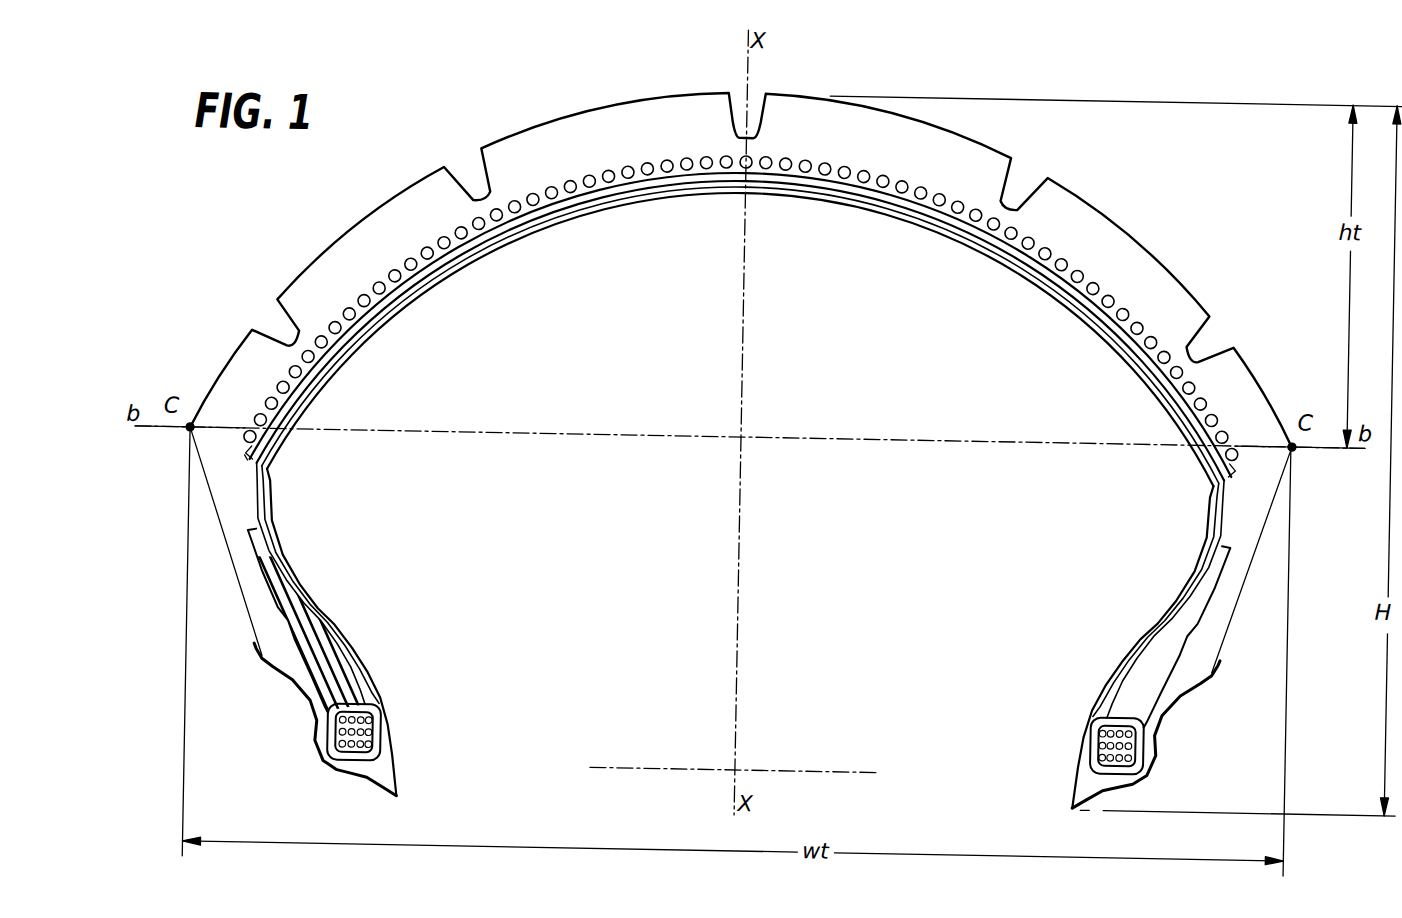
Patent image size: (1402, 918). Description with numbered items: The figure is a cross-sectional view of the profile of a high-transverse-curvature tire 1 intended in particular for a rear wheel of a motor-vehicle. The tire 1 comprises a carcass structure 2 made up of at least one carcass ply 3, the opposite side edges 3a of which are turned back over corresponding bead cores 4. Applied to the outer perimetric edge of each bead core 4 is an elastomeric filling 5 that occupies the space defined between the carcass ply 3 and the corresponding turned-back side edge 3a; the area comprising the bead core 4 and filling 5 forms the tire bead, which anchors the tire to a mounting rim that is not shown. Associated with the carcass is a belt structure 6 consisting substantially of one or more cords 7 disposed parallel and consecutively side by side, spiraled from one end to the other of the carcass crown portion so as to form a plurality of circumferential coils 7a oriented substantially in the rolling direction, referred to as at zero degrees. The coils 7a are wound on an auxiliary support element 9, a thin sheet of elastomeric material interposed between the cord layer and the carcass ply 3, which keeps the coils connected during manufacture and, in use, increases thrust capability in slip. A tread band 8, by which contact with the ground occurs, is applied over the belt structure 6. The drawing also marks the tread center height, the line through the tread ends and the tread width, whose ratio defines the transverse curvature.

The tire 1 is at (952, 65).
The carcass structure 2 is at (1248, 514).
The carcass ply 3 is at (1133, 343).
The turned-back side edge of the carcass ply 3a is at (1199, 624).
The bead core 4 is at (1136, 738).
The elastomeric filling 5 is at (1120, 693).
The belt structure 6 is at (245, 464).
The cord 7 is at (652, 162).
The circumferential coils 7a is at (882, 176).
The tread band 8 is at (1068, 216).
The auxiliary support element 9 is at (1209, 457).